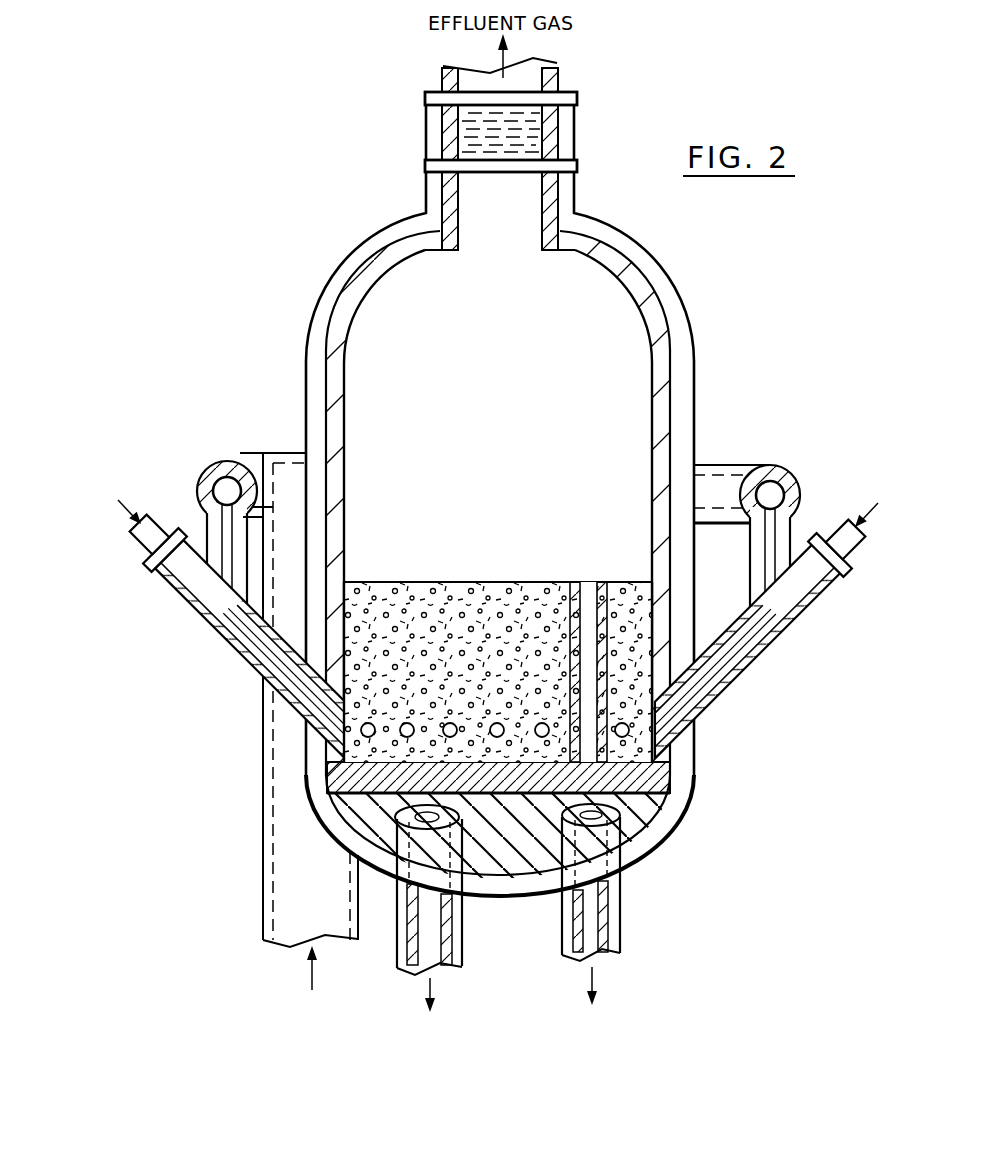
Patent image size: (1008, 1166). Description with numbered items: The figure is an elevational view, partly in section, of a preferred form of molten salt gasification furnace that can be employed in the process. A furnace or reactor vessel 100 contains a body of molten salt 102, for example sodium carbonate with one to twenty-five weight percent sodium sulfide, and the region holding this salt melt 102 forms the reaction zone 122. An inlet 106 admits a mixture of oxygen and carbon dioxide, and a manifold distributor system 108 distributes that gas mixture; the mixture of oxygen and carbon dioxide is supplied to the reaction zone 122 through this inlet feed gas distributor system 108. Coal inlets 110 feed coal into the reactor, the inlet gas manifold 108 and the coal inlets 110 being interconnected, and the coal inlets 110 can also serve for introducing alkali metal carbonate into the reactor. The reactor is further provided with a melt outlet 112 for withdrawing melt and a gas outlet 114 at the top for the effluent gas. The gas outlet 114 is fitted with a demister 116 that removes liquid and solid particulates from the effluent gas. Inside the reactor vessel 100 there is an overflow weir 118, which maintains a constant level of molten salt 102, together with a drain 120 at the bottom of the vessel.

The reactor vessel 100 is at (700, 304).
The molten salt 102 is at (492, 625).
The inlet 106 is at (262, 900).
The manifold distributor system 108 is at (222, 468).
The coal inlets 110 is at (192, 600).
The melt outlet 112 is at (608, 932).
The gas outlet 114 is at (535, 82).
The demister 116 is at (540, 144).
The overflow weir 118 is at (586, 582).
The drain 120 is at (463, 942).
The reaction zone 122 is at (450, 513).